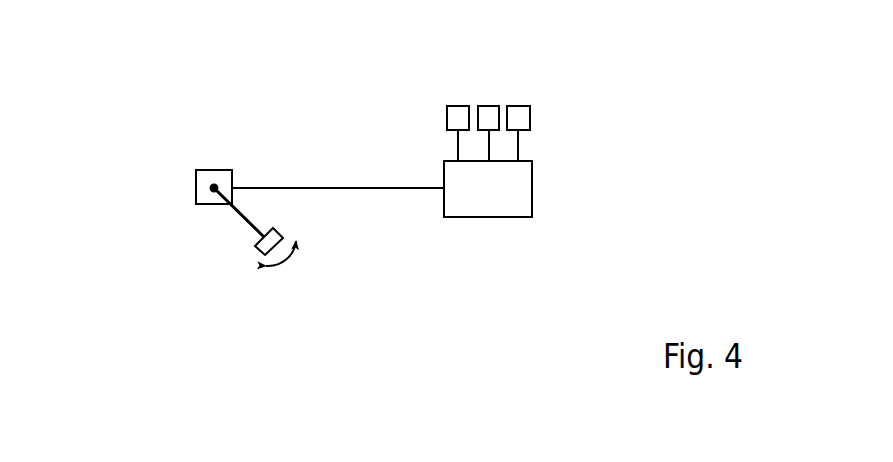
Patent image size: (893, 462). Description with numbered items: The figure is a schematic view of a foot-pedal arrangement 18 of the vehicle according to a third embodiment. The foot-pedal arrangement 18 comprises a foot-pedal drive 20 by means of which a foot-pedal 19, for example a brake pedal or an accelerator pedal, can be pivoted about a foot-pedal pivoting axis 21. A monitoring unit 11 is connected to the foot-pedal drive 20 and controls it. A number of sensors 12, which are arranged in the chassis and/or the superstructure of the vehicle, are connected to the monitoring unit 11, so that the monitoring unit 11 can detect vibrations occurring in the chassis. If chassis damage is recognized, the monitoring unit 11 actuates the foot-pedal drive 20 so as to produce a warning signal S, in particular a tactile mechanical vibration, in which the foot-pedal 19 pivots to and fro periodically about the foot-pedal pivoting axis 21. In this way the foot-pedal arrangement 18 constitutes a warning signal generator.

The foot-pedal arrangement 18 is at (171, 114).
The foot-pedal drive 20 is at (196, 195).
The foot-pedal pivoting axis 21 is at (221, 177).
The foot-pedal 19 is at (248, 226).
The warning signal S is at (290, 260).
The monitoring unit 11 is at (532, 193).
The sensors 12 is at (461, 112).